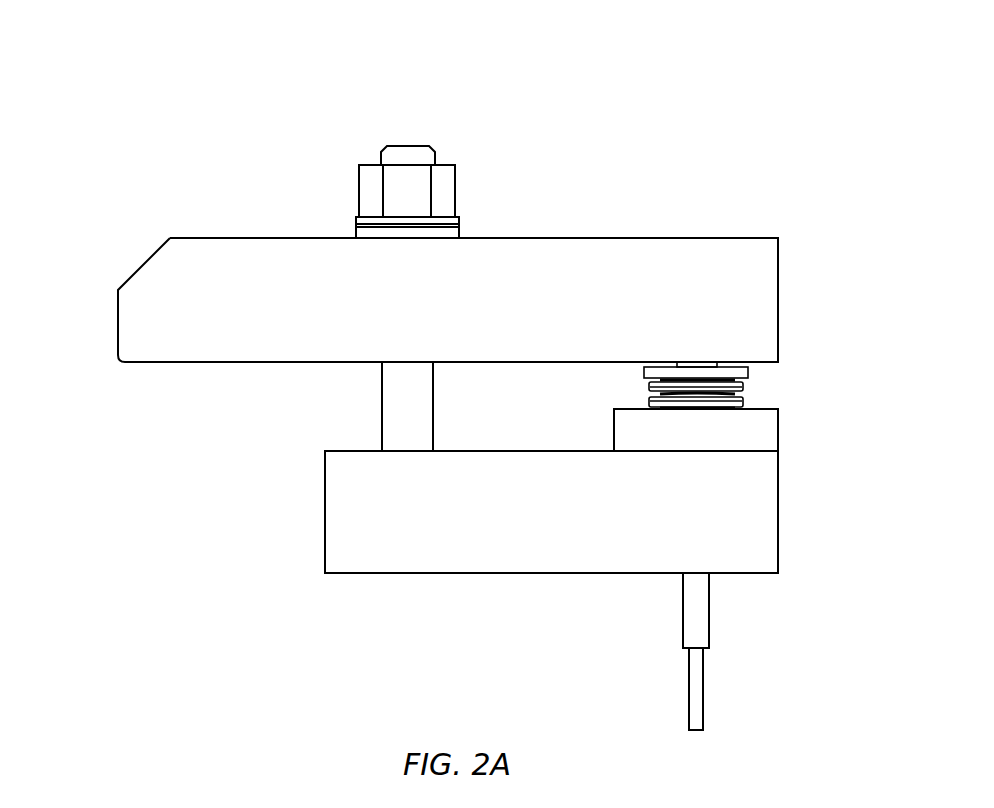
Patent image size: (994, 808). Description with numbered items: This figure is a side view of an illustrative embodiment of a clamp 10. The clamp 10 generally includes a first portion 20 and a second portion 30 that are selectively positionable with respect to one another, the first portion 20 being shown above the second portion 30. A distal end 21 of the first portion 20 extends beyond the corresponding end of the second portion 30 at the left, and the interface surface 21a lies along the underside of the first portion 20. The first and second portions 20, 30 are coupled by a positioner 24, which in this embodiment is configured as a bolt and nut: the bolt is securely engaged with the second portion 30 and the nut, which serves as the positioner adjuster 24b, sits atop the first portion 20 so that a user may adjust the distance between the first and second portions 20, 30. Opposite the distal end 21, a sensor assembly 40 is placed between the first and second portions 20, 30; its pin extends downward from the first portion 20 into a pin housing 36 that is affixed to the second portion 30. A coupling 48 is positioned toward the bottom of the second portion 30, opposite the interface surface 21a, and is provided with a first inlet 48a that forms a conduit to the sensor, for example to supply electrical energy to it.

The clamp 10 is at (583, 112).
The first portion 20 is at (556, 309).
The distal end 21 is at (117, 336).
The interface surface 21a is at (182, 363).
The positioner 24 is at (373, 393).
The positioner adjuster 24b is at (366, 180).
The second portion 30 is at (542, 530).
The pin housing 36 is at (672, 445).
The sensor assembly 40 is at (629, 385).
The coupling 48 is at (690, 593).
The first inlet 48a is at (703, 723).